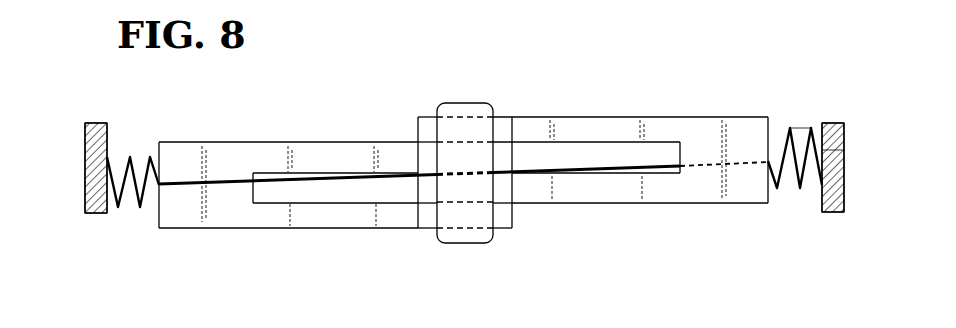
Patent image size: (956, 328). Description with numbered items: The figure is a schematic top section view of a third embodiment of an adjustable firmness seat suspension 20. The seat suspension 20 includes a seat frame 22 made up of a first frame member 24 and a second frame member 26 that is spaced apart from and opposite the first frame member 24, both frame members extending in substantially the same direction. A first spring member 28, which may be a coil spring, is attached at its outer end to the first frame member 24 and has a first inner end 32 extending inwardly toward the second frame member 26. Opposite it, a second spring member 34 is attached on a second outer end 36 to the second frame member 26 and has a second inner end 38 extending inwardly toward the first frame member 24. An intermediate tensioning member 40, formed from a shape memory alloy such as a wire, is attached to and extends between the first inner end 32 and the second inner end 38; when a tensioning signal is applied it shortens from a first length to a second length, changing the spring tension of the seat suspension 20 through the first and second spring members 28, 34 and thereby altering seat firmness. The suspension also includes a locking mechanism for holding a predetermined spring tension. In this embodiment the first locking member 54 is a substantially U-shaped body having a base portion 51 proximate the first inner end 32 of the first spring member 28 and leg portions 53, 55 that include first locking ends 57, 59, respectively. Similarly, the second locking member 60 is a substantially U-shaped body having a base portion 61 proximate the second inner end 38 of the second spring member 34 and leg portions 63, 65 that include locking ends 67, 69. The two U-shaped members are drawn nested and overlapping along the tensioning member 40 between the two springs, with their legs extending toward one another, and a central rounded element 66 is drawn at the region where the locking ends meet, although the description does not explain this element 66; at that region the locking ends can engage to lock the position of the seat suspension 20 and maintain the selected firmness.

The seat suspension 20 is at (86, 133).
The seat frame 22 is at (95, 208).
The first frame member 24 is at (85, 185).
The second frame member 26 is at (835, 172).
The first spring member 28 is at (128, 158).
The first inner end 32 is at (158, 180).
The second spring member 34 is at (803, 189).
The second outer end 36 is at (832, 150).
The second inner end 38 is at (786, 133).
The intermediate tensioning member 40 is at (228, 186).
The base portion 51 is at (222, 160).
The leg portion 53 is at (305, 160).
The first locking member 54 is at (305, 229).
The leg portion 55 is at (365, 215).
The first locking end 57 is at (497, 142).
The first locking end 59 is at (507, 229).
The second locking member 60 is at (710, 204).
The base portion 61 is at (718, 130).
The leg portion 63 is at (600, 135).
The leg portion 65 is at (598, 195).
The central coupling member 66 is at (463, 243).
The first locking end 67 is at (422, 116).
The first locking end 69 is at (424, 204).